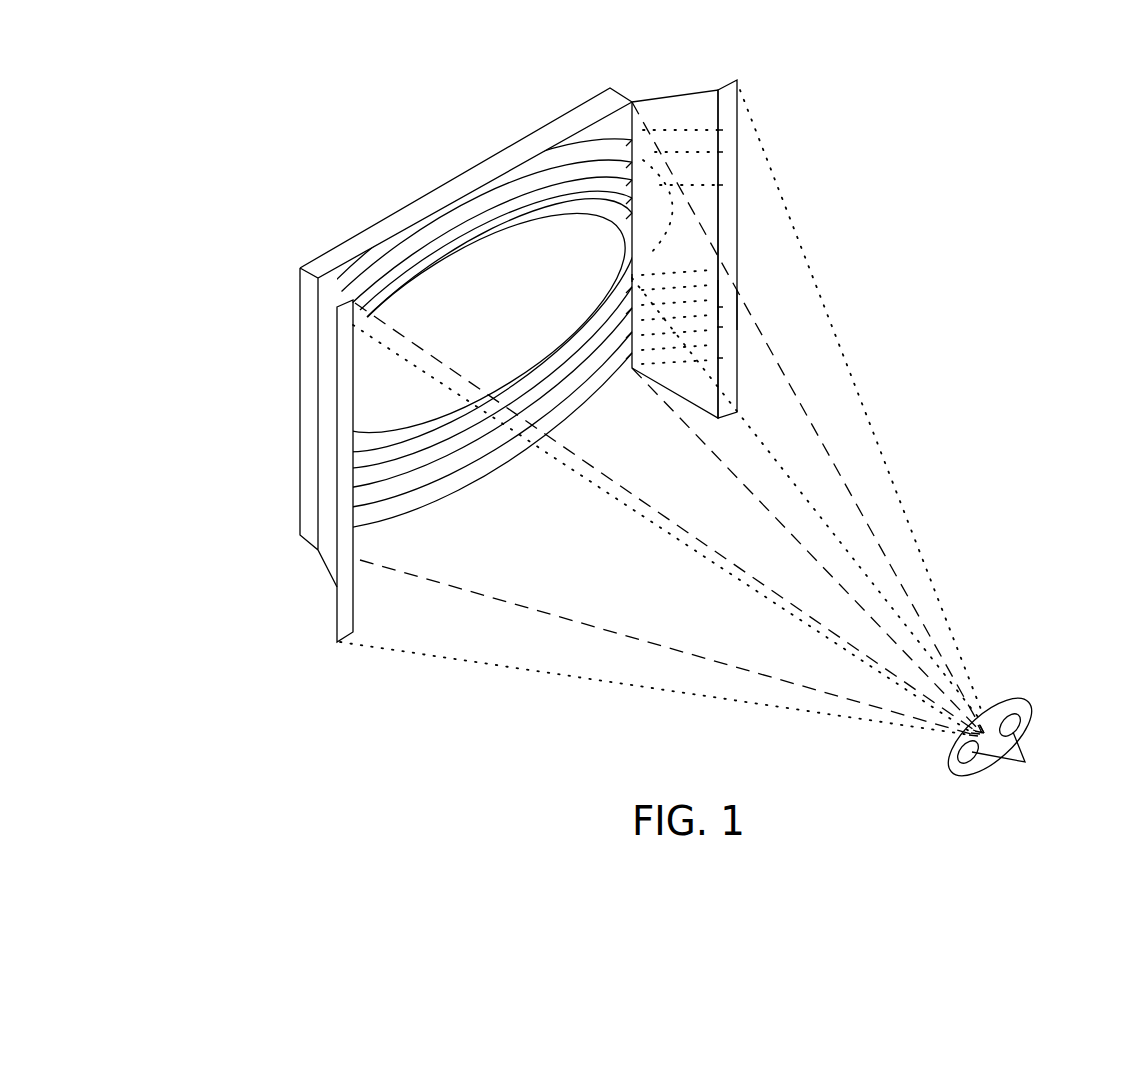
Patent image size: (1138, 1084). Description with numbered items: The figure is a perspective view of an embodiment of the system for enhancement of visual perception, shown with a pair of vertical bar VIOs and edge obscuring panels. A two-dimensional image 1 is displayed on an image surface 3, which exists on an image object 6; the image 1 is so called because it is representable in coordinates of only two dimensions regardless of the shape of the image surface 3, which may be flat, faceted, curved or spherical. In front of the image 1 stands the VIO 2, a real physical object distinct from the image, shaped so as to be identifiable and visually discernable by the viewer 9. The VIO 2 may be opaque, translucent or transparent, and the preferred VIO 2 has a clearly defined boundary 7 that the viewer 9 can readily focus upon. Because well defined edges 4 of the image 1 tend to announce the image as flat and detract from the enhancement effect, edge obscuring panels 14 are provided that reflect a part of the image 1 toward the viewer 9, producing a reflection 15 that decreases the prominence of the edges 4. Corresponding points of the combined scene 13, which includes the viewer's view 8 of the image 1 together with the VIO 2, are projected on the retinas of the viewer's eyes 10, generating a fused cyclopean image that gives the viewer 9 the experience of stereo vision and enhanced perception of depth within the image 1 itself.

The 2D image 1 is at (528, 282).
The VIO 2 is at (348, 413).
The image surface 3 is at (535, 250).
The edges of 2D image 4 is at (632, 278).
The image object 6 is at (553, 120).
The boundary 7 is at (738, 307).
The viewer's view 8 is at (837, 467).
The viewer 9 is at (1023, 703).
The eyes 10 is at (1017, 759).
The combined scene 13 is at (907, 632).
The edge obscuring panels 14 is at (695, 383).
The reflection 15 is at (695, 168).